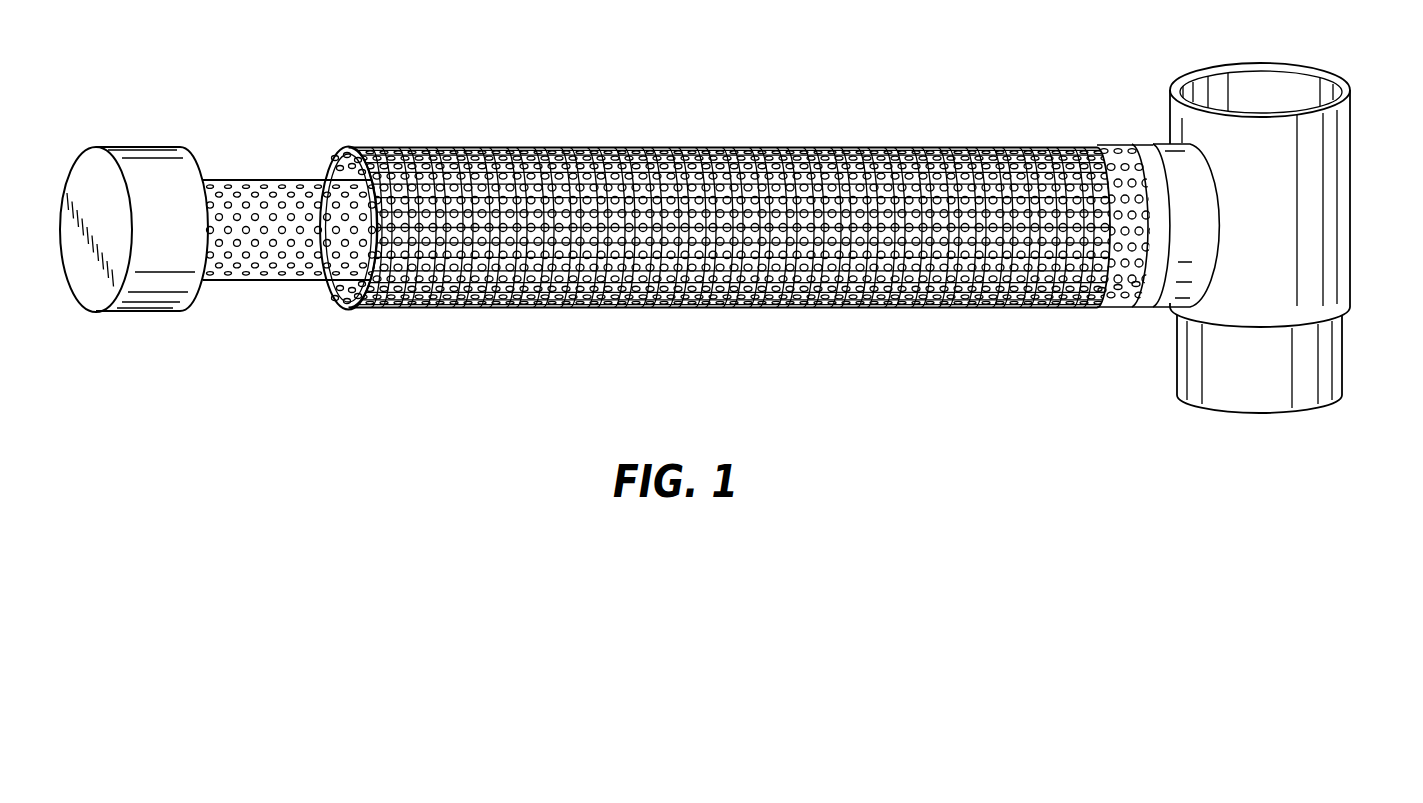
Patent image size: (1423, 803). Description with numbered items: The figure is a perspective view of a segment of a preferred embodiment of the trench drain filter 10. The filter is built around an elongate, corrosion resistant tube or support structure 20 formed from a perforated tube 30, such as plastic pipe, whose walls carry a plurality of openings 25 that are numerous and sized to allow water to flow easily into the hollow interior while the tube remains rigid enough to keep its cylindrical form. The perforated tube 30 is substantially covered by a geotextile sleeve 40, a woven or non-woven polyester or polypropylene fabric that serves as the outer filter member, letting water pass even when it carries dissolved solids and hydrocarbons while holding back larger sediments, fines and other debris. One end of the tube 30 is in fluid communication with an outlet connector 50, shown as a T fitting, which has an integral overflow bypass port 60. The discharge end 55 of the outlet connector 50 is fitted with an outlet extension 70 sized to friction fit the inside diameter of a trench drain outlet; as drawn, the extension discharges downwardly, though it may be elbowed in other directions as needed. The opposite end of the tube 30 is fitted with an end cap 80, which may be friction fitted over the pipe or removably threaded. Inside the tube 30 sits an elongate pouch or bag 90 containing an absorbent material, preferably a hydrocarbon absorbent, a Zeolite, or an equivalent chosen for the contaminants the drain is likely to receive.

The trench drain filter 10 is at (823, 101).
The support structure 20 is at (333, 302).
The openings 25 is at (1138, 283).
The perforated tube 30 is at (1110, 150).
The geotextile sleeve 40 is at (628, 146).
The outlet connector 50 is at (1350, 133).
The discharge end 55 is at (1347, 308).
The overflow bypass port 60 is at (1262, 80).
The outlet extension 70 is at (1283, 412).
The end cap 80 is at (152, 147).
The pouch or bag 90 is at (240, 180).